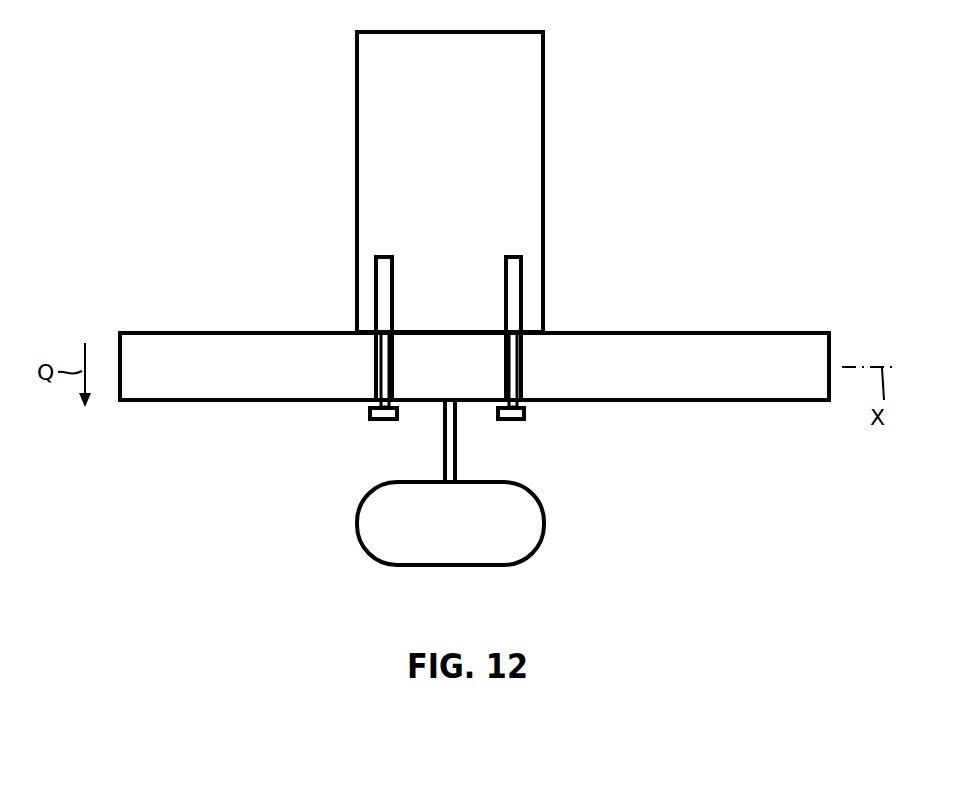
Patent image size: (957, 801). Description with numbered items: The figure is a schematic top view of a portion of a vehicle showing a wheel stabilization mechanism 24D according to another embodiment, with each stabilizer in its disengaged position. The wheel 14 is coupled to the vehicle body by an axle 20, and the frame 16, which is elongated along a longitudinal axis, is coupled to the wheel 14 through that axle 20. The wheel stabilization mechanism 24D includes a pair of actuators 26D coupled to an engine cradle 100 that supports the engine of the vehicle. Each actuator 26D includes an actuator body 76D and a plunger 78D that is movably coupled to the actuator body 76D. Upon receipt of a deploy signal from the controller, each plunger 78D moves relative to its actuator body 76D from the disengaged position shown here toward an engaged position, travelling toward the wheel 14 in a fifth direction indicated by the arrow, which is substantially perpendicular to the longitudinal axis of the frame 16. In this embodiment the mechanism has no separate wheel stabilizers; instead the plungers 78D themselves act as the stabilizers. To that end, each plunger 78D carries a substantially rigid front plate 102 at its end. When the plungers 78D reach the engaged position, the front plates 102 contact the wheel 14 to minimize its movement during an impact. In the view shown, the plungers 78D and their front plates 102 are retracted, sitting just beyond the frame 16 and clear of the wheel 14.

The engine cradle 100 is at (357, 137).
The frame 16 is at (163, 332).
The actuator body 76D is at (374, 257).
The actuator 26D is at (374, 293).
The wheel stabilization mechanism 24D is at (374, 308).
The plunger 78D is at (381, 366).
The front plate 102 is at (369, 413).
The axle 20 is at (443, 440).
The wheel 14 is at (356, 526).